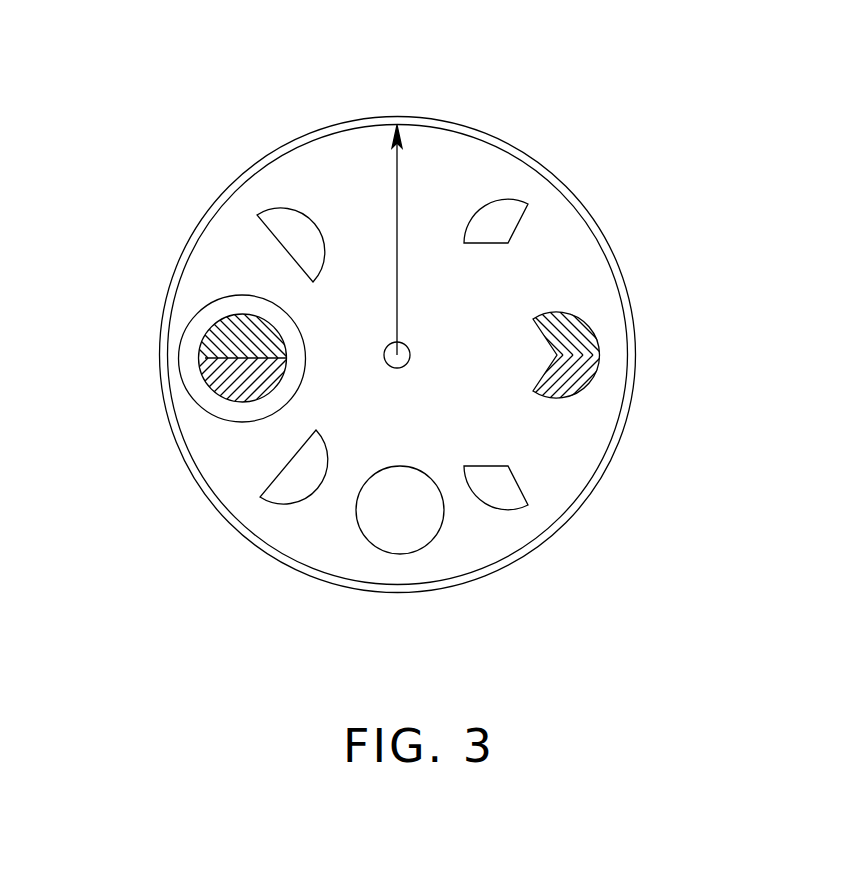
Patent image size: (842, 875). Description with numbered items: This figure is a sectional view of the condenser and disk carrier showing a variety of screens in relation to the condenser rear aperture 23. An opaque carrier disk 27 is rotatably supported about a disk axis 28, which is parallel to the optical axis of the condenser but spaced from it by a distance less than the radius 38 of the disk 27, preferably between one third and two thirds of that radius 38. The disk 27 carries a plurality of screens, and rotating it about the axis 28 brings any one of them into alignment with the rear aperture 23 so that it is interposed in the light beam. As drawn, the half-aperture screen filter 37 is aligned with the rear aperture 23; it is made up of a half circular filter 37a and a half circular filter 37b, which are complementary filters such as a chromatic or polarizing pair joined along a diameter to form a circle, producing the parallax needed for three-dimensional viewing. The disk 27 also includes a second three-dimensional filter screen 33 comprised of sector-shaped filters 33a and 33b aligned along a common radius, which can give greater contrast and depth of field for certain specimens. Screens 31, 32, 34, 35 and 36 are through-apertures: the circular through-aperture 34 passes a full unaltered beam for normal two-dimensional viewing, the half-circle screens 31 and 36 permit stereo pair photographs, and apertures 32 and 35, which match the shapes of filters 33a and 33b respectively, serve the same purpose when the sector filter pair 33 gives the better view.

The rear aperture 23 is at (294, 365).
The opaque carrier disk 27 is at (371, 193).
The disk axis 28 is at (397, 355).
The half-circle through-aperture screen 31 is at (295, 233).
The through-aperture screen 32 is at (498, 230).
The 3-D filter screen 33 is at (618, 350).
The sector filter 33a is at (590, 323).
The sector filter 33b is at (590, 387).
The circular through-aperture screen 34 is at (401, 515).
The through-aperture screen 35 is at (500, 478).
The half-circle through-aperture screen 36 is at (300, 480).
The half-aperture screen filter 37 is at (199, 360).
The half circular filter 37a is at (207, 327).
The half circular filter 37b is at (207, 388).
The radius of the disk 38 is at (397, 283).